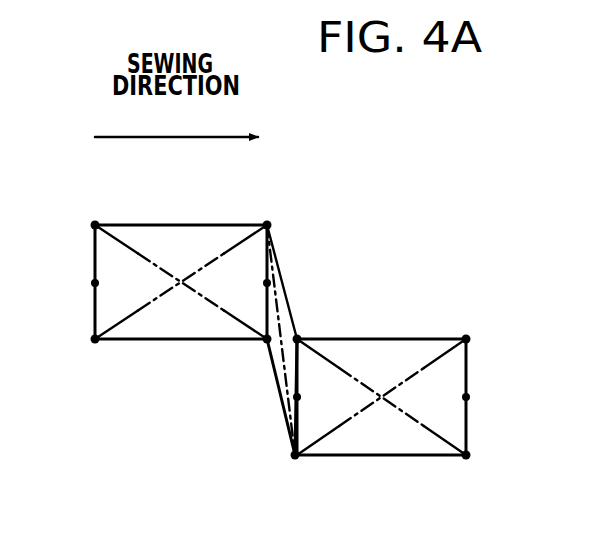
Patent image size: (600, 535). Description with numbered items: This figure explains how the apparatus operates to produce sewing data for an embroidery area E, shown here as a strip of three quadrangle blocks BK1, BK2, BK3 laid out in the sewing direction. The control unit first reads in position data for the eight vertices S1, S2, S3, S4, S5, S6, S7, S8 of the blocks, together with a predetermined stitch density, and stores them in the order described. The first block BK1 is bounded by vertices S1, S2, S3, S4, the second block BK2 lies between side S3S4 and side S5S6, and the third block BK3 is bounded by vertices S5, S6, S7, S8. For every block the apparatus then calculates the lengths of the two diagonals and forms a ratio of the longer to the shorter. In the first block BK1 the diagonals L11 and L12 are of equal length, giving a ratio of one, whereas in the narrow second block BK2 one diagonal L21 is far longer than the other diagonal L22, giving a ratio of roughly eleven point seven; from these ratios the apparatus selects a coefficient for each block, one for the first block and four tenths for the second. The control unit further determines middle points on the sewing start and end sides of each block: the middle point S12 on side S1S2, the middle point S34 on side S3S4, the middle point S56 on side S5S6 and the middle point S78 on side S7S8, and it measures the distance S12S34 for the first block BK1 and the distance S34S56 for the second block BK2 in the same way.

The embroidery area E is at (403, 172).
The first quadrangle block BK1 is at (167, 345).
The second quadrangle block BK2 is at (278, 394).
The third quadrangle block BK3 is at (395, 462).
The vertex S1 is at (93, 341).
The vertex S2 is at (95, 223).
The vertex S3 is at (266, 342).
The vertex S4 is at (269, 223).
The vertex S5 is at (295, 457).
The vertex S6 is at (299, 338).
The vertex S7 is at (467, 457).
The vertex S8 is at (467, 337).
The middle point S12 is at (93, 285).
The middle point S34 is at (265, 283).
The middle point S56 is at (299, 397).
The middle point S78 is at (470, 397).
The diagonal L11 is at (213, 258).
The diagonal L12 is at (148, 257).
The diagonal L21 is at (293, 322).
The diagonal L22 is at (280, 298).